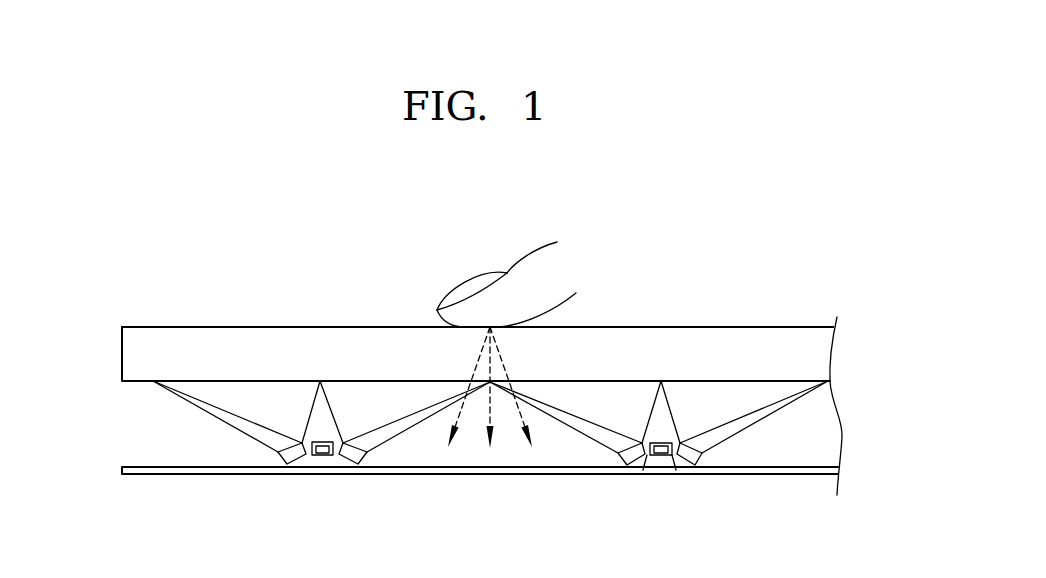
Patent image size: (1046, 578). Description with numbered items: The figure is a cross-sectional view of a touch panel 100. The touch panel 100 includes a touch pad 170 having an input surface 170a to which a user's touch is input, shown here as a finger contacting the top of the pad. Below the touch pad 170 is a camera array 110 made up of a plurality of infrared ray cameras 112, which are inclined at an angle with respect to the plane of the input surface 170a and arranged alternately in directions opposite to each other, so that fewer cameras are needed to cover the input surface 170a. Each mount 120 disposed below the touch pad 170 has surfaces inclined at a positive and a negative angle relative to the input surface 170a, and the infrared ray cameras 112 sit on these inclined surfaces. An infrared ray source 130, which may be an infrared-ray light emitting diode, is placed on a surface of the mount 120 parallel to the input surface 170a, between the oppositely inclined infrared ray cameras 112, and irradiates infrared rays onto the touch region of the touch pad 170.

The touch panel 100 is at (162, 281).
The camera array 110 is at (421, 487).
The infrared ray camera 112 is at (286, 464).
The mount 120 is at (322, 456).
The infrared ray source 130 is at (328, 456).
The touch pad 170 is at (823, 353).
The input surface 170a is at (767, 326).